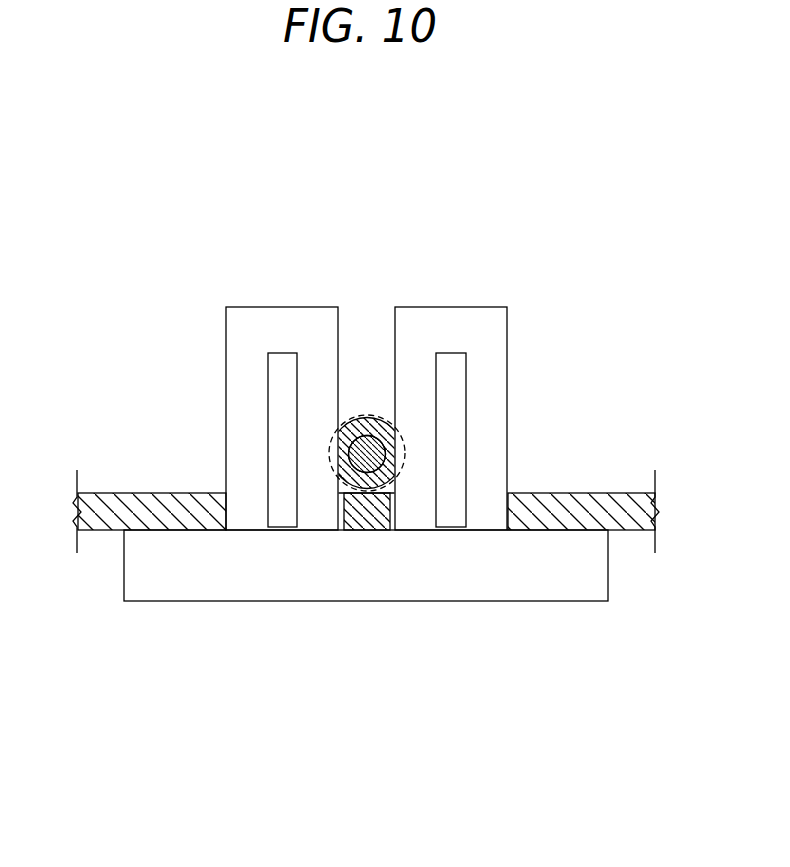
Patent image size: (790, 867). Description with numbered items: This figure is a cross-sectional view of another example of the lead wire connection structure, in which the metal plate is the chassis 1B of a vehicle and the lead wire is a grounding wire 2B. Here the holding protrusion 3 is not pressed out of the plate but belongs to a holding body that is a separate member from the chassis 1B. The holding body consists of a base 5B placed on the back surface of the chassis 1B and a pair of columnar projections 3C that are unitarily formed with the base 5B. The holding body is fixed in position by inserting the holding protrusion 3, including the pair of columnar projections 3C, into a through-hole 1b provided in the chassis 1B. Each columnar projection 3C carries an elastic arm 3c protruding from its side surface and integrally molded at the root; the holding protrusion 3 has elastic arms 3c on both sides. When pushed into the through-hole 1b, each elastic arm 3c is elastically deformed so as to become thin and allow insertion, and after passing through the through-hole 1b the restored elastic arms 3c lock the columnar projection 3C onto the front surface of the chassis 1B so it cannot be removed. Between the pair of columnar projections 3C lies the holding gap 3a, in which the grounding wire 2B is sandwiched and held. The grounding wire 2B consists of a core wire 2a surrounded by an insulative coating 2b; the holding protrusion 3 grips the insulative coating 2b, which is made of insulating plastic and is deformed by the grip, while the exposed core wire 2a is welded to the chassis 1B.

The holding protrusion 3 is at (524, 170).
The columnar projection 3C is at (288, 328).
The elastic arm 3c is at (280, 390).
The holding gap 3a is at (367, 347).
The chassis 1B is at (586, 493).
The through-hole 1b is at (224, 492).
The base 5B is at (266, 575).
The grounding wire 2B is at (405, 585).
The core wire 2a is at (366, 468).
The insulative coating 2b is at (374, 494).